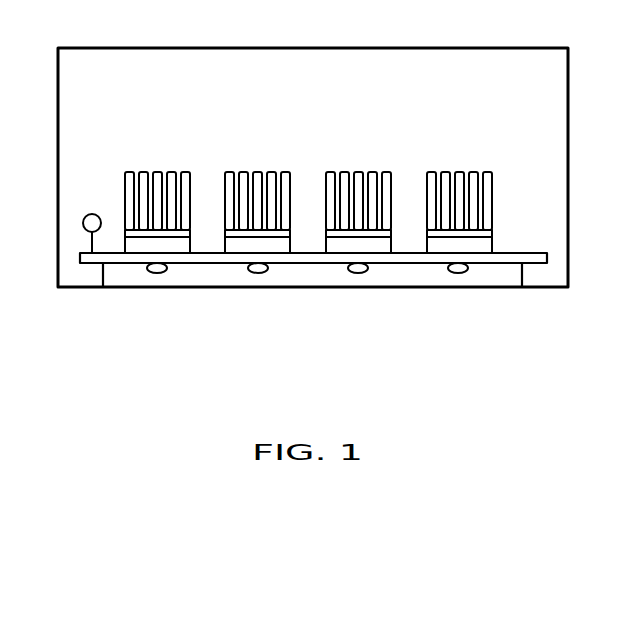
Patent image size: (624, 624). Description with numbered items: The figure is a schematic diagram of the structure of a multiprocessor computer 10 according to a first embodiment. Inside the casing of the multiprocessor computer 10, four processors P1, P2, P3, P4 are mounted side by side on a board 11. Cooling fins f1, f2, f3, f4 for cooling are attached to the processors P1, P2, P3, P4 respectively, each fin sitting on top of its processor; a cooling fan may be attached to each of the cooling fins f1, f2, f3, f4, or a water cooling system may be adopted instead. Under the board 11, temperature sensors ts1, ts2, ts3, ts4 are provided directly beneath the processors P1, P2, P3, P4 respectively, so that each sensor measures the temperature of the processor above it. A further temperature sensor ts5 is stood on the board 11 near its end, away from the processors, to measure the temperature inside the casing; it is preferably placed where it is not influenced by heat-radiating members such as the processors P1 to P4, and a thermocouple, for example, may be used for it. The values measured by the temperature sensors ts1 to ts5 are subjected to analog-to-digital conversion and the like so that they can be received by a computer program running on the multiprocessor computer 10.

The multiprocessor computer 10 is at (535, 47).
The board 11 is at (523, 253).
The processor P1 is at (177, 247).
The processor P2 is at (277, 247).
The processor P3 is at (378, 247).
The processor P4 is at (479, 247).
The cooling fin f1 is at (168, 178).
The cooling fin f2 is at (268, 178).
The cooling fin f3 is at (370, 178).
The cooling fin f4 is at (470, 178).
The temperature sensor ts1 is at (157, 273).
The temperature sensor ts2 is at (258, 273).
The temperature sensor ts3 is at (358, 273).
The temperature sensor ts4 is at (458, 273).
The temperature sensor ts5 is at (92, 214).